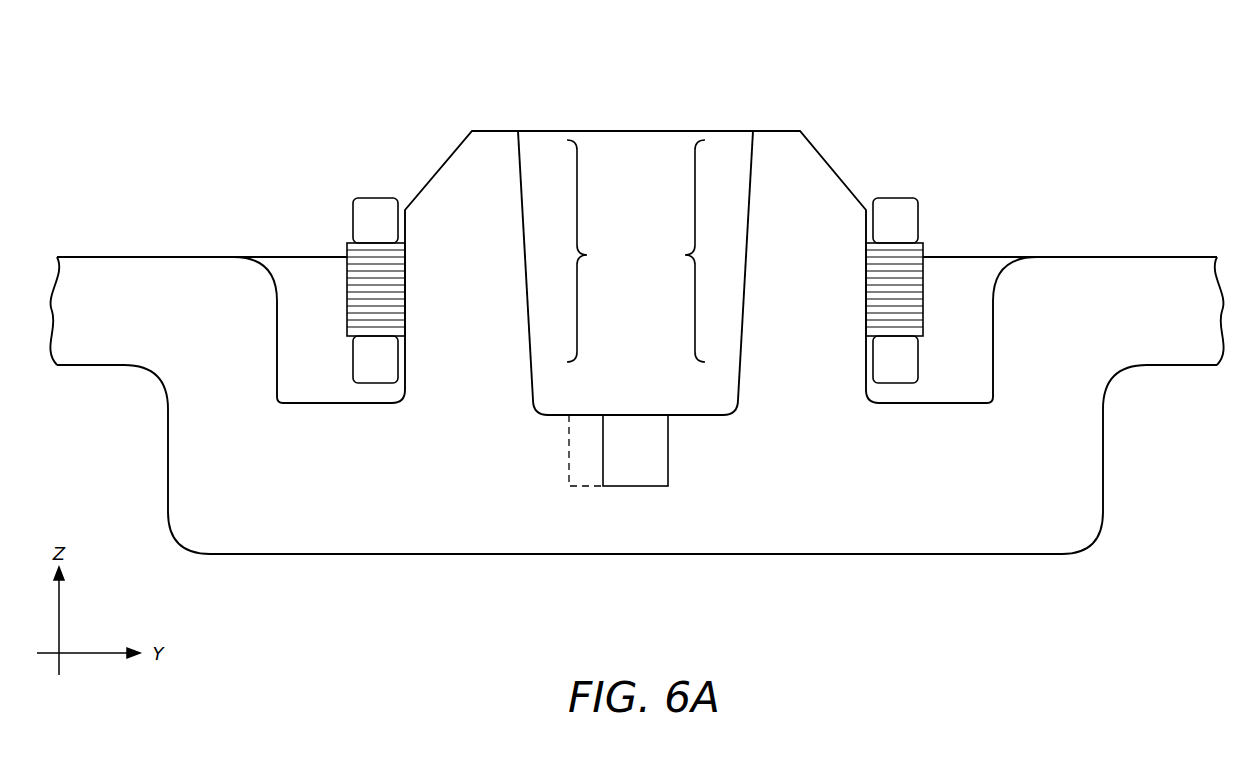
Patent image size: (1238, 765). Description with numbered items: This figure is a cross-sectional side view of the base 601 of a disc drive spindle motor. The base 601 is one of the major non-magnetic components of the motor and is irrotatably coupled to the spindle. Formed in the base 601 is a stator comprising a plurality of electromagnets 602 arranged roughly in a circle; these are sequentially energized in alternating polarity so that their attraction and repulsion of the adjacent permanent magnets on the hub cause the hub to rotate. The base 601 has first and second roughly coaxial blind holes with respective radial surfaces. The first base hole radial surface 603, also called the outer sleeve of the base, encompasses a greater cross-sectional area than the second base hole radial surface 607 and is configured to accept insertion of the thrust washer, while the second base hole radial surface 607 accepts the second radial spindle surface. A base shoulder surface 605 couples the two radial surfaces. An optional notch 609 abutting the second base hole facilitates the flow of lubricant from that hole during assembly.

The base 601 is at (1052, 74).
The electromagnets 602 is at (345, 273).
The first base hole radial surface 603 is at (635, 265).
The base shoulder surface 605 is at (545, 403).
The second base hole radial surface 607 is at (649, 478).
The notch 609 is at (587, 475).